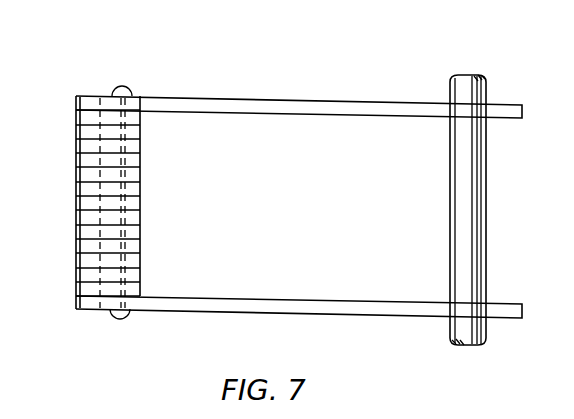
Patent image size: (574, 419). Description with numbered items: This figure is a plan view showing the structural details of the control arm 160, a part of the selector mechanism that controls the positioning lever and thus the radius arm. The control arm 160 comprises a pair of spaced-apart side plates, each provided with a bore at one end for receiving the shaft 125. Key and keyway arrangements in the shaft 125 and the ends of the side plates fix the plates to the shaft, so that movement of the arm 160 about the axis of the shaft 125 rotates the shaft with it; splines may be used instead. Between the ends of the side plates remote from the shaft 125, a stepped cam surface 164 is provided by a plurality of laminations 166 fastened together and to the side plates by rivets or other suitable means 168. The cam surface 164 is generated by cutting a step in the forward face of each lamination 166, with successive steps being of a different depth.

The control arm 160 is at (245, 94).
The stepped cam surface 164 is at (76, 229).
The laminations 166 is at (140, 192).
The rivets 168 is at (129, 94).
The shaft 125 is at (473, 225).